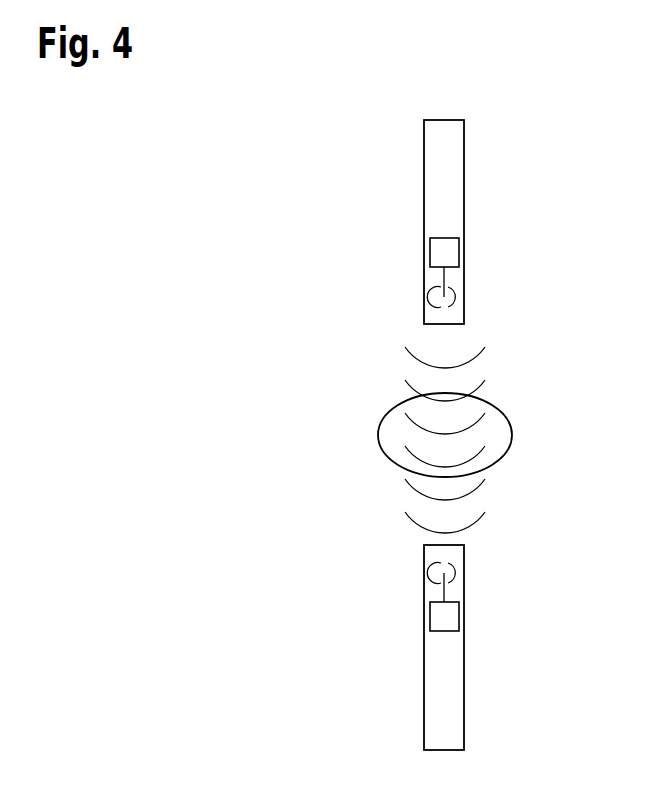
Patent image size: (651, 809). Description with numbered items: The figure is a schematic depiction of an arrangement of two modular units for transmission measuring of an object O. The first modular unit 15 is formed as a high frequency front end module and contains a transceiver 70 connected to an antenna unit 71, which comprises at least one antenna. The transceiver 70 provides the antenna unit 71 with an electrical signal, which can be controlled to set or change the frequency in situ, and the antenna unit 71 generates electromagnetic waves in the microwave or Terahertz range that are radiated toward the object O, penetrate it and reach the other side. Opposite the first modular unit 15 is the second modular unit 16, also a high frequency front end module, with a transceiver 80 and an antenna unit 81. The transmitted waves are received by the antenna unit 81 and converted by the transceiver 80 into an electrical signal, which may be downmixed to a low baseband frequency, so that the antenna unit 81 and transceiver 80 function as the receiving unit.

The first modular unit 15 is at (447, 178).
The transceiver 70 is at (447, 252).
The antenna unit 71 is at (450, 297).
The object O is at (498, 437).
The second modular unit 16 is at (447, 692).
The antenna unit 81 is at (450, 572).
The transceiver 80 is at (447, 617).